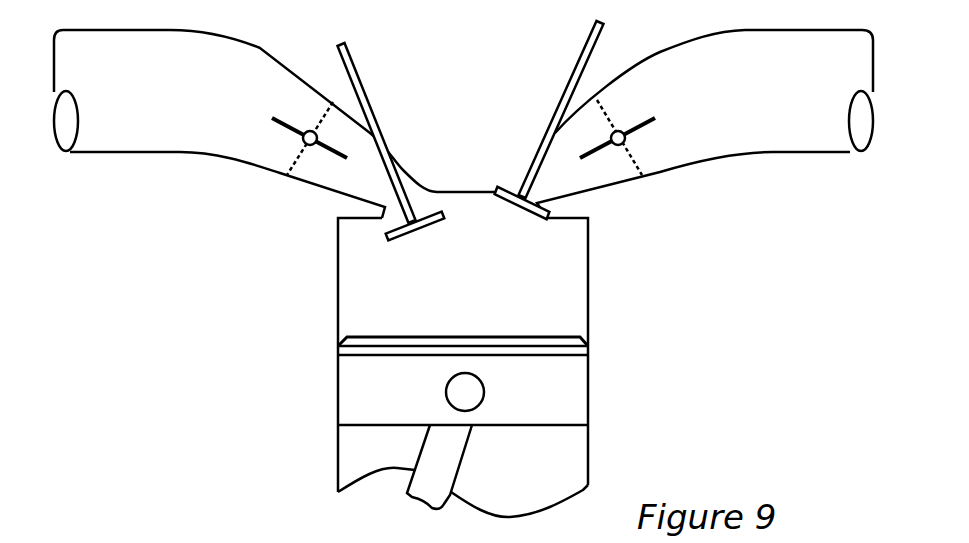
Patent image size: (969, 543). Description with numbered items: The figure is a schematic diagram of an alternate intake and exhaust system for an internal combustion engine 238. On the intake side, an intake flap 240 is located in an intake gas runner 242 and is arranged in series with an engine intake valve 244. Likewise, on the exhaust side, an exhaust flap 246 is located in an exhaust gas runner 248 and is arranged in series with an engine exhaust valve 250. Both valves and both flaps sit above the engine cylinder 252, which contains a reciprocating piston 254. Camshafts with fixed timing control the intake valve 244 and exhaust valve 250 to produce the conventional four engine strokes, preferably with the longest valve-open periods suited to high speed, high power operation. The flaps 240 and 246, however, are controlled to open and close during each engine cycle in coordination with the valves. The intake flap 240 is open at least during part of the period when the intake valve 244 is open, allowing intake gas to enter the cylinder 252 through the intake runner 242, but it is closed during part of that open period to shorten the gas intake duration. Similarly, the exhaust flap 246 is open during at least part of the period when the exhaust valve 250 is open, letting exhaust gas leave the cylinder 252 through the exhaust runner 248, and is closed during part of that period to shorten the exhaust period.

The internal combustion engine 238 is at (290, 356).
The intake flap 240 is at (293, 125).
The intake gas runner 242 is at (120, 152).
The engine intake valve 244 is at (387, 132).
The exhaust flap 246 is at (637, 123).
The exhaust gas runner 248 is at (810, 152).
The engine exhaust valve 250 is at (558, 107).
The engine cylinder 252 is at (588, 270).
The reciprocating piston 254 is at (582, 392).